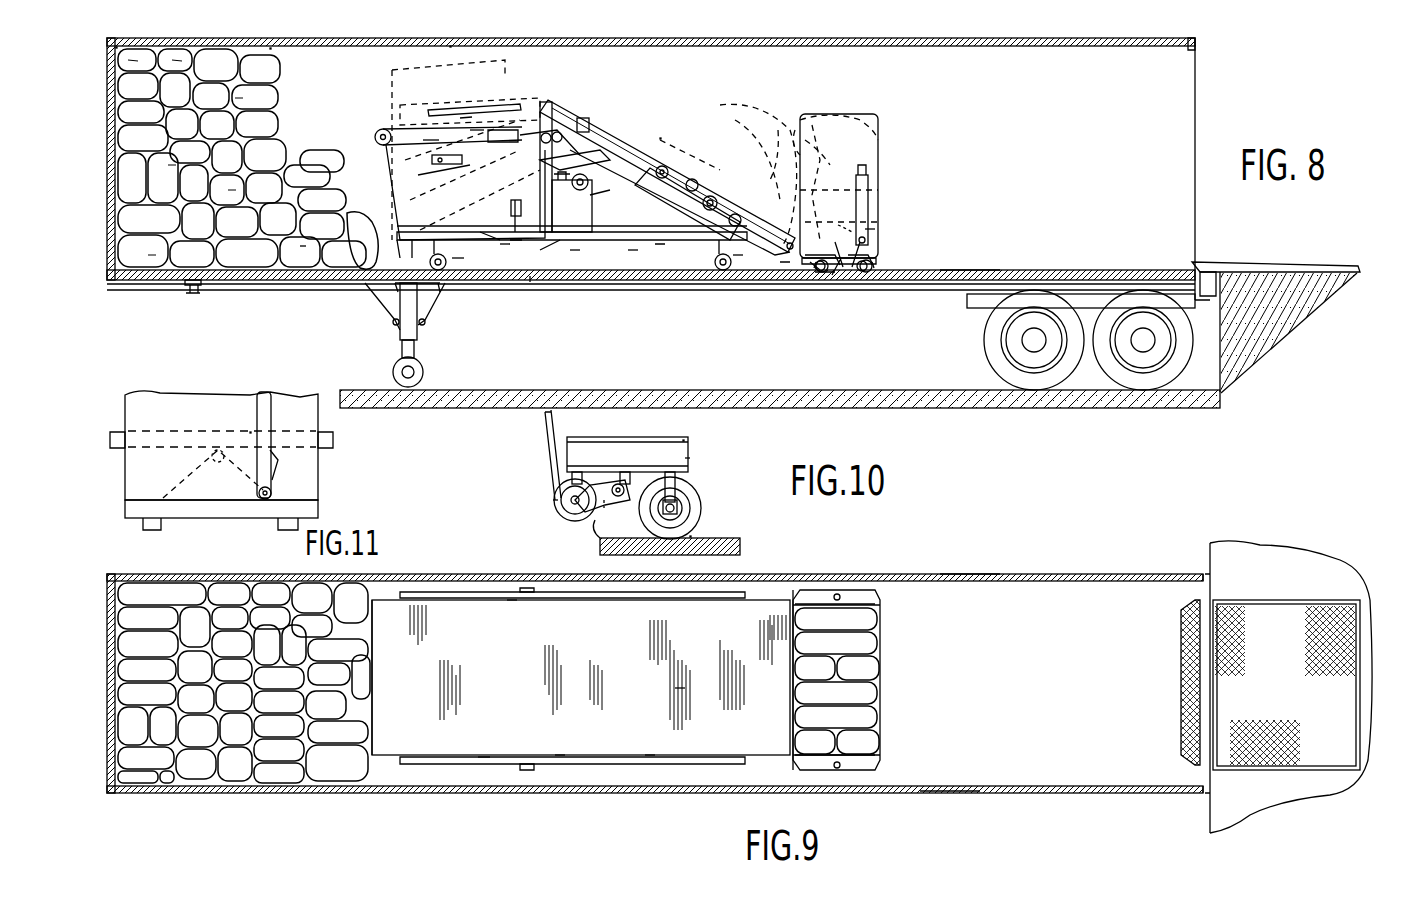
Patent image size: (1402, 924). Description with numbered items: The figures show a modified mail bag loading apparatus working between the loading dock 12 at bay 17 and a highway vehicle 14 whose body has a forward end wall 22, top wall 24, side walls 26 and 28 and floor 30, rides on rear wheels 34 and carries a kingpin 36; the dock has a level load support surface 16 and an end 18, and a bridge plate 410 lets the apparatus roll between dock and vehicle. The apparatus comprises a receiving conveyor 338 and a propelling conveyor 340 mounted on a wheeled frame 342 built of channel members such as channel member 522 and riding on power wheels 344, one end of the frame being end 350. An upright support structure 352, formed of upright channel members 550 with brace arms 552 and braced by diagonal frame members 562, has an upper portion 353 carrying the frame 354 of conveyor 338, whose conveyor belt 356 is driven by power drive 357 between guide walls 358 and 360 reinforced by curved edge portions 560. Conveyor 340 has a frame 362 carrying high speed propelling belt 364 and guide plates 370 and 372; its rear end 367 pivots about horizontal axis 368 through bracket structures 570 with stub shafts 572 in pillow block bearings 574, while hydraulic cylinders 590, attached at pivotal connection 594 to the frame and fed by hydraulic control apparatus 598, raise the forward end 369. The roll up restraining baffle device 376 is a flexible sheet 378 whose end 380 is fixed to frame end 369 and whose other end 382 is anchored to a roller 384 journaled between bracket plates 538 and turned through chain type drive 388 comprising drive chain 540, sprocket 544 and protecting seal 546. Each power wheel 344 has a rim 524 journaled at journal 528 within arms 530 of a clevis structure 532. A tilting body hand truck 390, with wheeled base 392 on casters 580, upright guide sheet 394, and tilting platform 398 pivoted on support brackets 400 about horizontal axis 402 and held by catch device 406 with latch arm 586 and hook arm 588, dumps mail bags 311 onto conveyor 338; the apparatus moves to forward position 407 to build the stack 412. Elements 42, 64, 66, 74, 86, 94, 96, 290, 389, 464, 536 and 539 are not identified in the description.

In FIG. 8, the loading dock 12 is at (1297, 251).
In FIG. 9, the vehicle 14 is at (1076, 566).
In FIG. 8, the level load support surface 16 is at (1362, 270).
In FIG. 9, the level load support surface 16 is at (1310, 580).
In FIG. 9, the bay 17 is at (1248, 565).
In FIG. 8, the shoulder or end 18 is at (1217, 278).
In FIG. 8, the forward end wall 22 is at (110, 170).
In FIG. 8, the top wall 24 is at (452, 45).
In FIG. 9, the side wall 26 is at (950, 795).
In FIG. 9, the side wall 28 is at (965, 578).
In FIG. 8, the floor 30 is at (955, 272).
In FIG. 8, the rear wheels 34 is at (985, 345).
In FIG. 8, the kingpin 36 is at (202, 292).
In FIG. 10, the frame beam 42 is at (635, 470).
In FIG. 8, the bin lid 64 is at (460, 118).
In FIG. 8, the casters 66 is at (458, 256).
In FIG. 8, the control box 74 is at (530, 203).
In FIG. 10, the frame member 86 is at (680, 456).
In FIG. 9, the pallet end rail 94 is at (880, 606).
In FIG. 9, the pallet end rail 96 is at (880, 758).
In FIG. 8, the conveyor drive 290 is at (665, 138).
In FIG. 8, the mail bags 311 is at (262, 75).
In FIG. 8, the mail bag receiving conveyor 338 is at (690, 130).
In FIG. 9, the mail bag receiving conveyor 338 is at (650, 757).
In FIG. 8, the mail bag propelling or positioning conveyor 340 is at (548, 85).
In FIG. 9, the mail bag propelling or positioning conveyor 340 is at (480, 630).
In FIG. 8, the wheeled frame 342 is at (598, 268).
In FIG. 9, the wheeled frame 342 is at (570, 695).
In FIG. 8, the power wheels 344 is at (430, 285).
In FIG. 10, the power wheels 344 is at (686, 532).
In FIG. 8, the end of wheeled frame 350 is at (738, 258).
In FIG. 8, the upright support structure 352 is at (530, 282).
In FIG. 8, the upper portion of support structure 353 is at (562, 160).
In FIG. 8, the frame of receiving conveyor 354 is at (720, 212).
In FIG. 8, the conveyor belt 356 is at (840, 210).
In FIG. 9, the conveyor belt 356 is at (560, 756).
In FIG. 8, the power drive 357 is at (660, 248).
In FIG. 8, the guide wall 358 is at (805, 172).
In FIG. 9, the guide wall 358 is at (680, 690).
In FIG. 8, the guide wall 360 is at (832, 190).
In FIG. 9, the guide wall 360 is at (770, 640).
In FIG. 8, the frame of propelling conveyor 362 is at (400, 128).
In FIG. 9, the high speed propelling belt 364 is at (445, 620).
In FIG. 8, the rear end of frame 367 is at (500, 132).
In FIG. 8, the horizontal axis 368 is at (556, 131).
In FIG. 8, the forward end of frame 369 is at (380, 132).
In FIG. 8, the guide plate 370 is at (432, 140).
In FIG. 9, the guide plate 370 is at (484, 760).
In FIG. 8, the guide plate 372 is at (475, 132).
In FIG. 9, the guide plate 372 is at (512, 605).
In FIG. 8, the roll up type bag restraining baffle device 376 is at (395, 332).
In FIG. 8, the flexible sheet 378 is at (372, 225).
In FIG. 10, the flexible sheet 378 is at (547, 432).
In FIG. 8, the end of flexible sheet 380 is at (302, 250).
In FIG. 10, the other end of flexible sheet 382 is at (598, 490).
In FIG. 10, the roller 384 is at (548, 500).
In FIG. 10, the chain type drive 388 is at (604, 540).
In FIG. 9, the pallet frame 389 is at (840, 640).
In FIG. 8, the tilting body type hand truck 390 is at (900, 100).
In FIG. 8, the wheeled base 392 is at (882, 260).
In FIG. 11, the wheeled base 392 is at (218, 512).
In FIG. 11, the upright guide sheet 394 is at (318, 462).
In FIG. 8, the tilting platform 398 is at (882, 232).
In FIG. 8, the support brackets 400 is at (862, 268).
In FIG. 8, the horizontal axis 402 is at (825, 272).
In FIG. 8, the catch device 406 is at (880, 245).
In FIG. 11, the catch device 406 is at (250, 432).
In FIG. 8, the forward broken line position 407 is at (292, 112).
In FIG. 9, the bridge plate 410 is at (1260, 760).
In FIG. 8, the stack 412 is at (143, 46).
In FIG. 8, the guide 464 is at (875, 180).
In FIG. 8, the channel member 522 is at (632, 252).
In FIG. 10, the rim 524 is at (700, 520).
In FIG. 10, the journal 528 is at (680, 505).
In FIG. 10, the arms of clevis structure 530 is at (680, 478).
In FIG. 10, the clevis structure 532 is at (690, 460).
In FIG. 10, the tire 536 is at (712, 514).
In FIG. 10, the bracket plates 538 is at (578, 478).
In FIG. 8, the jack wheel 539 is at (380, 350).
In FIG. 10, the drive chain 540 is at (625, 468).
In FIG. 10, the sprocket 544 is at (575, 518).
In FIG. 10, the protecting seal 546 is at (615, 488).
In FIG. 8, the upright channel members 550 is at (680, 138).
In FIG. 8, the brace arm 552 is at (595, 200).
In FIG. 8, the curved edge portions 560 is at (585, 128).
In FIG. 8, the diagonal frame members 562 is at (458, 262).
In FIG. 8, the bracket structure 570 is at (548, 122).
In FIG. 8, the stub shaft 572 is at (440, 168).
In FIG. 8, the pillow block type bearings 574 is at (470, 185).
In FIG. 8, the casters 580 is at (875, 266).
In FIG. 11, the latch arm 586 is at (272, 480).
In FIG. 11, the hook arm 588 is at (280, 452).
In FIG. 8, the hydraulic cylinder 590 is at (505, 247).
In FIG. 8, the pivotal connection 594 is at (516, 242).
In FIG. 8, the hydraulic control apparatus 598 is at (575, 252).